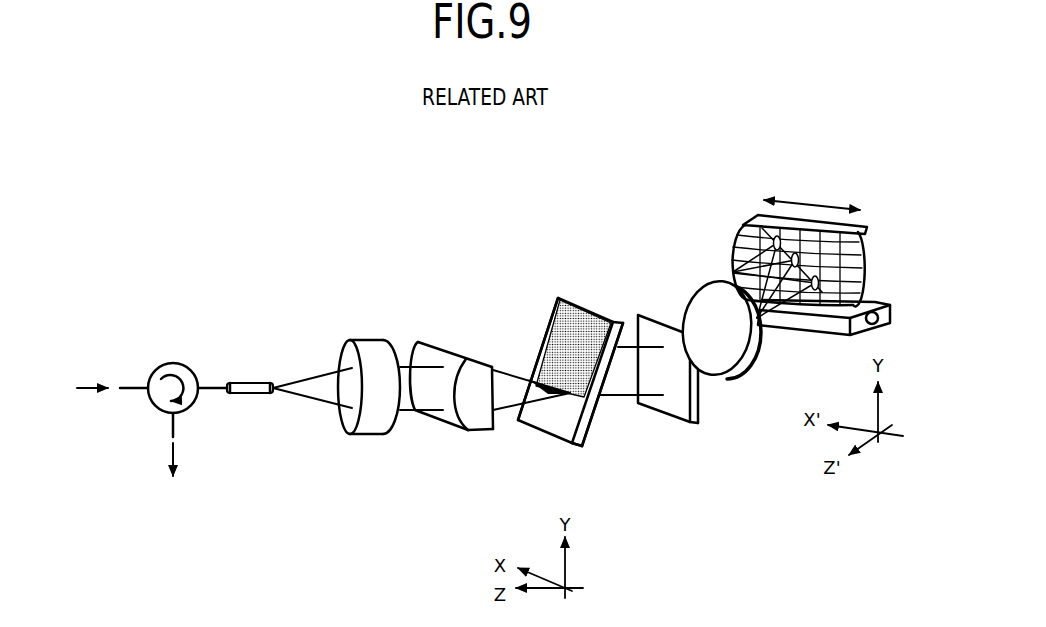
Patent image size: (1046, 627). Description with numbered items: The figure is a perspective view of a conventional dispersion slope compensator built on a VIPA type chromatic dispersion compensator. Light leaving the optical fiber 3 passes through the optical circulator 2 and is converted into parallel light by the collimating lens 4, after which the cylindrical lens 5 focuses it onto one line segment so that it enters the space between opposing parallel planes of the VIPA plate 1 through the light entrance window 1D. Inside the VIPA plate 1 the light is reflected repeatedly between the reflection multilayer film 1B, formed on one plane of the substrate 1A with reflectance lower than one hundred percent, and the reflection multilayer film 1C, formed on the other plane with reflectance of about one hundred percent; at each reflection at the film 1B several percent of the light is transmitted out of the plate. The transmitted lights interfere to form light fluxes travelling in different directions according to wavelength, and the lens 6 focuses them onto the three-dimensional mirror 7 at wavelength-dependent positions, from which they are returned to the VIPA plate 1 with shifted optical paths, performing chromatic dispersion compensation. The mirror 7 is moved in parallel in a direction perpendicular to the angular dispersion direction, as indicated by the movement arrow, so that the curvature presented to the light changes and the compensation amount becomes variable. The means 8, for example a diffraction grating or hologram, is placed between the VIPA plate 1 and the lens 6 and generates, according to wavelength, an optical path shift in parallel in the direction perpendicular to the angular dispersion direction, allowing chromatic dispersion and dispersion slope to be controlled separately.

The VIPA plate 1 is at (576, 374).
The substrate 1A is at (578, 445).
The reflection multilayer film 1B is at (590, 420).
The reflection multilayer film 1C is at (558, 330).
The light entrance window 1D is at (552, 410).
The optical circulator 2 is at (173, 363).
The optical fiber 3 is at (247, 380).
The collimating lens 4 is at (360, 340).
The cylindrical lens 5 is at (433, 342).
The lens 6 is at (713, 282).
The three-dimensional mirror 7 is at (742, 227).
The means 8 is at (695, 428).